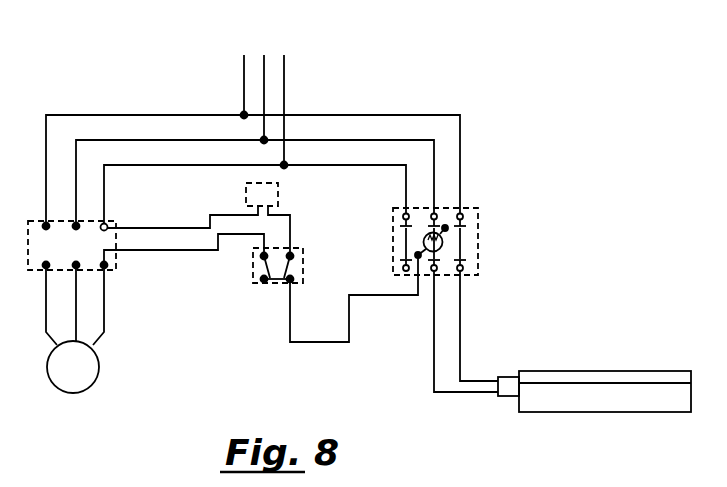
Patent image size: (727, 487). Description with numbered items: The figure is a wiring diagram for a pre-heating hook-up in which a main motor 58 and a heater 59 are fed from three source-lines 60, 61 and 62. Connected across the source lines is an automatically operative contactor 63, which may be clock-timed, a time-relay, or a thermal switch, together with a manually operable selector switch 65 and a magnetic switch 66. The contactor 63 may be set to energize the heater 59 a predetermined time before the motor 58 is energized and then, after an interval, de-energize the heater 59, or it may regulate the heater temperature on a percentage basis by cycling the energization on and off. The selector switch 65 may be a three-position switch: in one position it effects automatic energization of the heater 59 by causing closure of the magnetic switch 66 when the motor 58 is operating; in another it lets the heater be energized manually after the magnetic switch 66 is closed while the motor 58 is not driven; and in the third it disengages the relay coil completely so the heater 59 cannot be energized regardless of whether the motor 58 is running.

The main motor 58 is at (71, 393).
The heater 59 is at (591, 410).
The source-line 60 is at (285, 80).
The source-line 61 is at (268, 40).
The source-line 62 is at (243, 78).
The automatically operative contactor 63 is at (278, 192).
The selector switch 65 is at (256, 265).
The magnetic switch 66 is at (446, 226).